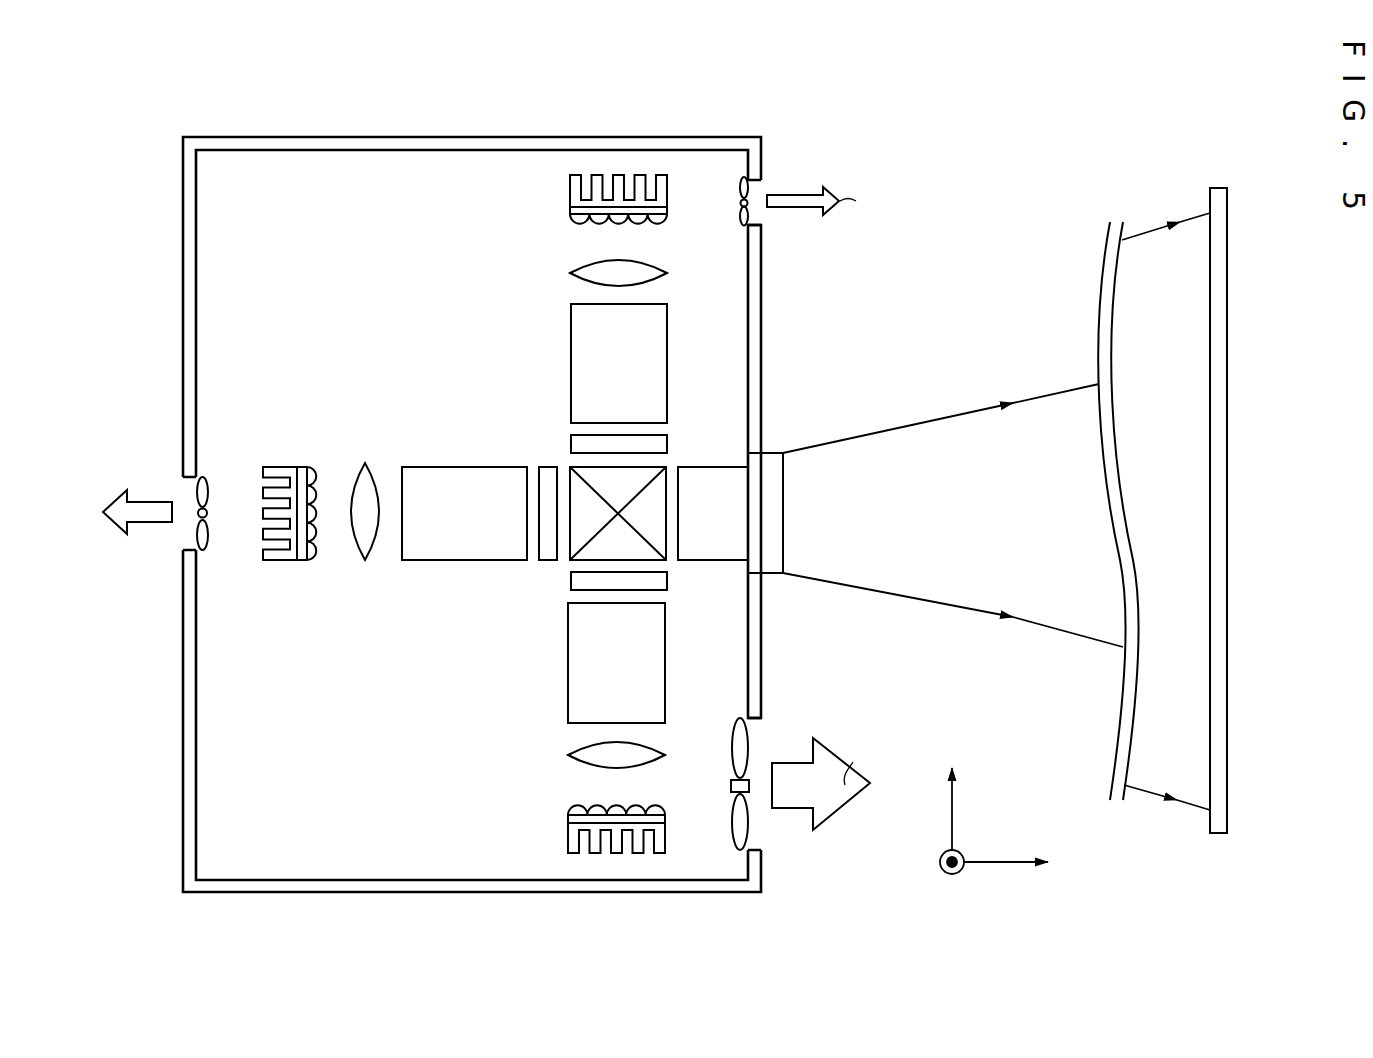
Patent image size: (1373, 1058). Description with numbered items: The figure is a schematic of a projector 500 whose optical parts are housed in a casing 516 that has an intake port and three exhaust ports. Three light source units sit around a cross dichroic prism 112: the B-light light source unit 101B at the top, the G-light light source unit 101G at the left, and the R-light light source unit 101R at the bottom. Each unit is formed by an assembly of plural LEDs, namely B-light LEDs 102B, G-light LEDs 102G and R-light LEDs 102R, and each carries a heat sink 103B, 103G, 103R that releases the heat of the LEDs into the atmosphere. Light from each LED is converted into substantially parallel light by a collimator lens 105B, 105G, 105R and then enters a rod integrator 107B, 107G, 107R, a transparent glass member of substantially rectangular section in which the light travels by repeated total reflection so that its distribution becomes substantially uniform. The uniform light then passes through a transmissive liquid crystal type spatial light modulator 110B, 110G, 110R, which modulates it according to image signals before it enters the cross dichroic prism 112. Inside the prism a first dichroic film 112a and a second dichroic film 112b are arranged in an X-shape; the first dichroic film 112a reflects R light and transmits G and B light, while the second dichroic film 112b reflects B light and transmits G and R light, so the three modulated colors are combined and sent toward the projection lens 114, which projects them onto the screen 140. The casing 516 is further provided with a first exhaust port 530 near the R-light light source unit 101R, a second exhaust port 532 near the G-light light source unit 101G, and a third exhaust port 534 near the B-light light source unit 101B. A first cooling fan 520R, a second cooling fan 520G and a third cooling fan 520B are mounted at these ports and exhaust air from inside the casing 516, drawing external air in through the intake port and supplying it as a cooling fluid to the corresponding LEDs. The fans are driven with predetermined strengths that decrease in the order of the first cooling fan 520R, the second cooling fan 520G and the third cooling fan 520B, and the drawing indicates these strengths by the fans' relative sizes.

The projector 500 is at (900, 133).
The casing 516 is at (672, 137).
The B-light light source unit 101B is at (564, 216).
The B-light LED 102B is at (655, 224).
The heat sink 103B is at (658, 178).
The collimator lens 105B is at (573, 273).
The rod integrator 107B is at (571, 352).
The B-light liquid crystal type spatial light modulator 110B is at (571, 445).
The G-light light source unit 101G is at (302, 462).
The G-light LED 102G is at (306, 560).
The heat sink 103G is at (272, 560).
The collimator lens 105G is at (365, 462).
The rod integrator 107G is at (423, 467).
The G-light liquid crystal type spatial light modulator 110G is at (548, 560).
The R-light light source unit 101R is at (566, 808).
The R-light LED 102R is at (650, 806).
The heat sink 103R is at (661, 845).
The collimator lens 105R is at (572, 750).
The rod integrator 107R is at (570, 692).
The R-light liquid crystal type spatial light modulator 110R is at (572, 588).
The cross dichroic prism 112 is at (668, 470).
The first dichroic film 112a is at (572, 560).
The second dichroic film 112b is at (571, 467).
The projection lens 114 is at (770, 574).
The screen 140 is at (1218, 833).
The second cooling fan 520G is at (206, 478).
The third cooling fan 520B is at (750, 186).
The first cooling fan 520R is at (752, 735).
The second exhaust port 532 is at (180, 548).
The third exhaust port 534 is at (764, 226).
The first exhaust port 530 is at (764, 850).